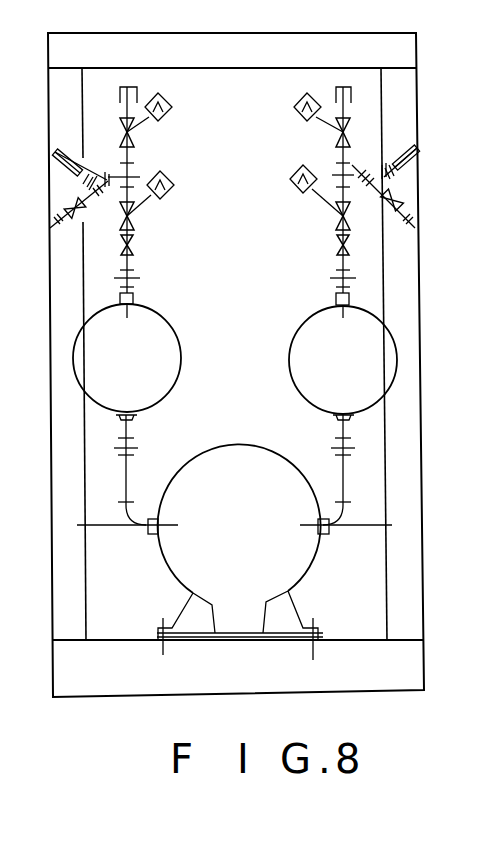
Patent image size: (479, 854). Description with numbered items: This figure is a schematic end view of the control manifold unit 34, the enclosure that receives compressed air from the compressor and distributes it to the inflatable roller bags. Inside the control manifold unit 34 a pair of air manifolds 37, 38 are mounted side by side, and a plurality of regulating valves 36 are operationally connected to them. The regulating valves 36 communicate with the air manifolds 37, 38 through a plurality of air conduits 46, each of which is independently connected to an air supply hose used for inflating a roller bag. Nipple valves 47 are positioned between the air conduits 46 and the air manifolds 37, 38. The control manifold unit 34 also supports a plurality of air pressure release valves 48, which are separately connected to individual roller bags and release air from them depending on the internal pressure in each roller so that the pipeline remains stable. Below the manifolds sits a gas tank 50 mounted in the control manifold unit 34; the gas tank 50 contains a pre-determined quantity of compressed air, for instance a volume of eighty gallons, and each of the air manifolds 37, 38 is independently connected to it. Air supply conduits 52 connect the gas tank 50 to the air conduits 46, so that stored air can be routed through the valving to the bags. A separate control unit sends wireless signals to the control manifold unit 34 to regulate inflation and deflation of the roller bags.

The control manifold unit 34 is at (401, 98).
The regulating valves 36 is at (172, 112).
The air manifold 37 is at (162, 352).
The air manifold 38 is at (307, 386).
The air conduits 46 is at (133, 270).
The nipple valves 47 is at (135, 299).
The air pressure release valves 48 is at (420, 146).
The gas tank 50 is at (312, 565).
The air supply conduits 52 is at (347, 478).